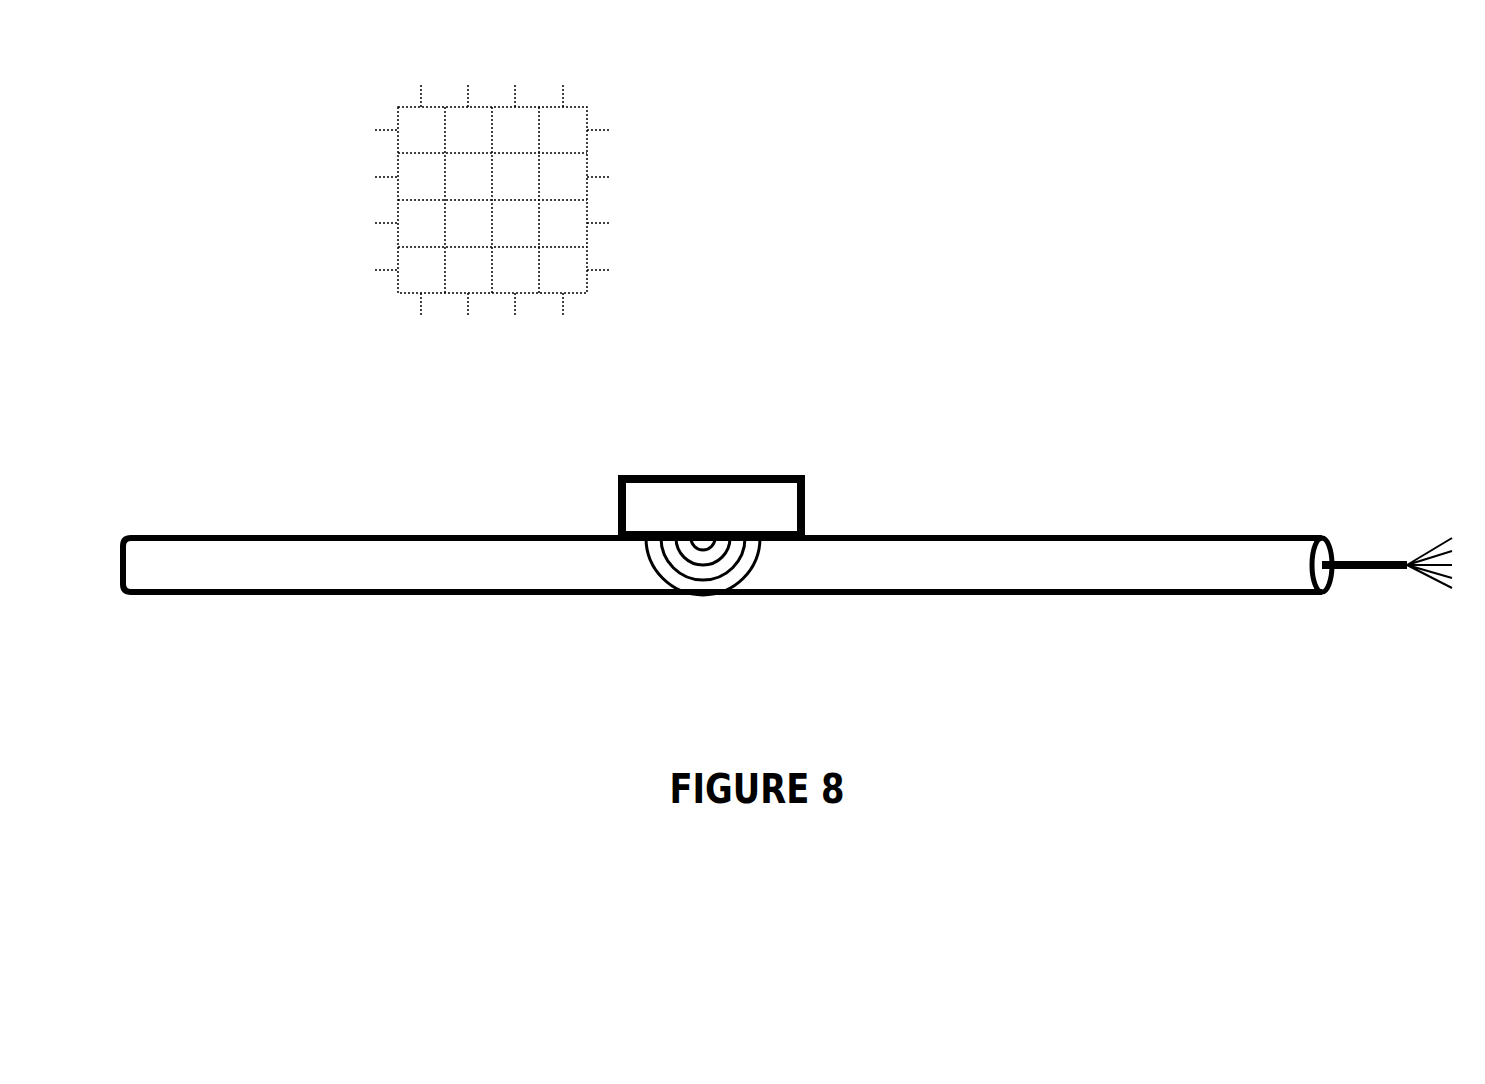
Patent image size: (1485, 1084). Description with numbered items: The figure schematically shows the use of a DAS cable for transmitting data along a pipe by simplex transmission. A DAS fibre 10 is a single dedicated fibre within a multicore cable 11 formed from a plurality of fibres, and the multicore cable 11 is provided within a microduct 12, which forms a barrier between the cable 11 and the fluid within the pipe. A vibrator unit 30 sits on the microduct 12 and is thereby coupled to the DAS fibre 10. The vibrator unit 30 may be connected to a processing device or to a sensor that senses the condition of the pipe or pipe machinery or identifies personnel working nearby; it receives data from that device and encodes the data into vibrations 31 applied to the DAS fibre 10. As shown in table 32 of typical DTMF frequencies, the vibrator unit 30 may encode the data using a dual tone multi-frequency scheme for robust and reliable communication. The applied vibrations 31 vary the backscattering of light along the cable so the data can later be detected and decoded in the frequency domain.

The DAS fibre 10 is at (1448, 535).
The multicore cable 11 is at (1368, 555).
The microduct 12 is at (375, 535).
The vibrator unit 30 is at (723, 470).
The vibrations 31 is at (662, 577).
The table 32 is at (658, 207).